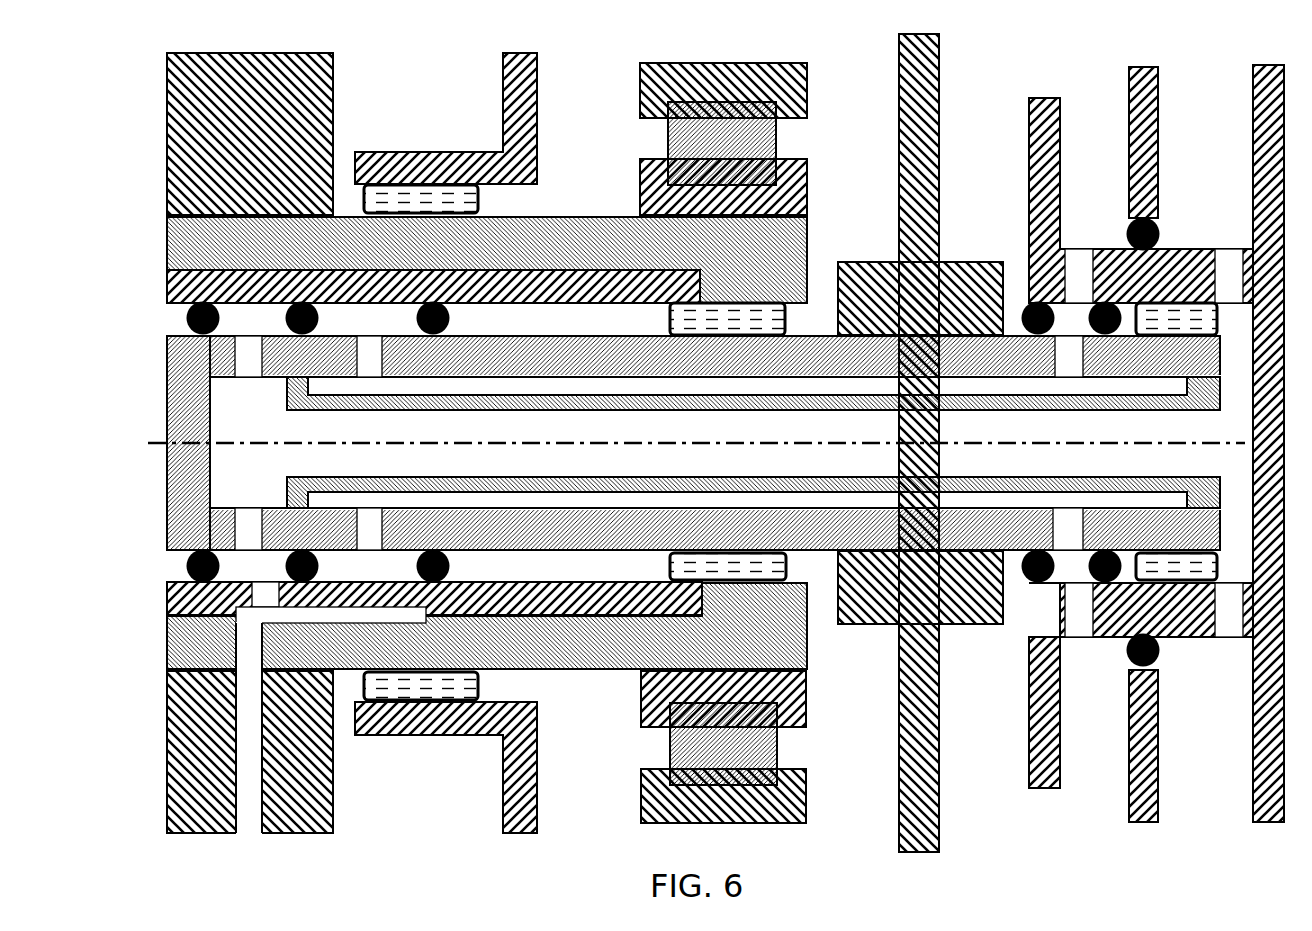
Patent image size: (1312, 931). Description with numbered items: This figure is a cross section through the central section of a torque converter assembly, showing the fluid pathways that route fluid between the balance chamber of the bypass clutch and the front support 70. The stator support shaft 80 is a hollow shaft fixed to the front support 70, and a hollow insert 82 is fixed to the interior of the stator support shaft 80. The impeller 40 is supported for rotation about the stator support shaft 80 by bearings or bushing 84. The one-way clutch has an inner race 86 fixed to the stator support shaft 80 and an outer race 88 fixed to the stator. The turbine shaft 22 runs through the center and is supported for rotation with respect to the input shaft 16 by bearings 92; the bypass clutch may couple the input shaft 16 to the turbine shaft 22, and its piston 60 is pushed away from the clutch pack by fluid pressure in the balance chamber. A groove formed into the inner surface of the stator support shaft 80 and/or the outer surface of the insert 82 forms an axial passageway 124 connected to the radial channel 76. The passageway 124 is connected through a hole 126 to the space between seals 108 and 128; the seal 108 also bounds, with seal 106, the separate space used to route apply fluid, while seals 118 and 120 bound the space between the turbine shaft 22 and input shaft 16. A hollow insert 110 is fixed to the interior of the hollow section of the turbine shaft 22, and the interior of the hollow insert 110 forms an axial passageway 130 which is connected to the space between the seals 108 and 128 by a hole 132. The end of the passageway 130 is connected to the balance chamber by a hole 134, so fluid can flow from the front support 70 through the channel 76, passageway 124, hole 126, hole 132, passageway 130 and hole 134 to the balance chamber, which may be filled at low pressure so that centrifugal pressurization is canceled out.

The transmission input shaft 16 is at (1253, 122).
The turbine shaft 22 is at (807, 553).
The impeller 40 is at (537, 97).
The piston 60 is at (1130, 73).
The front support 70 is at (333, 77).
The radial channel 76 is at (262, 732).
The stator support shaft 80 is at (552, 672).
The hollow insert 82 is at (615, 270).
The bearings or bushing 84 is at (425, 184).
The inner race 86 is at (807, 187).
The outer race 88 is at (640, 90).
The bearings 92 is at (1177, 583).
The seal 106 is at (436, 335).
The seal 108 is at (300, 335).
The hollow insert 110 is at (926, 491).
The seal 118 is at (1042, 550).
The seal 120 is at (1105, 550).
The axial passageway 124 is at (332, 628).
The hole 126 is at (250, 593).
The seal 128 is at (207, 335).
The axial passageway 130 is at (923, 410).
The hole 132 is at (238, 532).
The hole 134 is at (1228, 262).